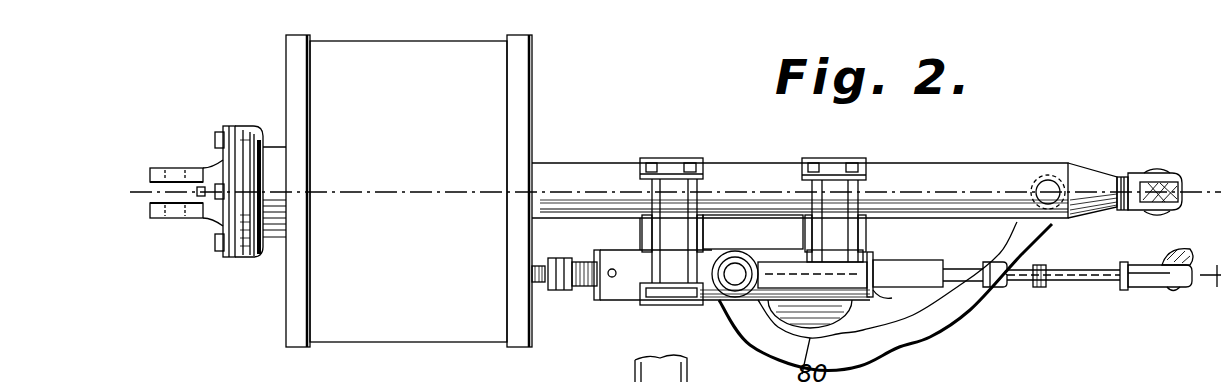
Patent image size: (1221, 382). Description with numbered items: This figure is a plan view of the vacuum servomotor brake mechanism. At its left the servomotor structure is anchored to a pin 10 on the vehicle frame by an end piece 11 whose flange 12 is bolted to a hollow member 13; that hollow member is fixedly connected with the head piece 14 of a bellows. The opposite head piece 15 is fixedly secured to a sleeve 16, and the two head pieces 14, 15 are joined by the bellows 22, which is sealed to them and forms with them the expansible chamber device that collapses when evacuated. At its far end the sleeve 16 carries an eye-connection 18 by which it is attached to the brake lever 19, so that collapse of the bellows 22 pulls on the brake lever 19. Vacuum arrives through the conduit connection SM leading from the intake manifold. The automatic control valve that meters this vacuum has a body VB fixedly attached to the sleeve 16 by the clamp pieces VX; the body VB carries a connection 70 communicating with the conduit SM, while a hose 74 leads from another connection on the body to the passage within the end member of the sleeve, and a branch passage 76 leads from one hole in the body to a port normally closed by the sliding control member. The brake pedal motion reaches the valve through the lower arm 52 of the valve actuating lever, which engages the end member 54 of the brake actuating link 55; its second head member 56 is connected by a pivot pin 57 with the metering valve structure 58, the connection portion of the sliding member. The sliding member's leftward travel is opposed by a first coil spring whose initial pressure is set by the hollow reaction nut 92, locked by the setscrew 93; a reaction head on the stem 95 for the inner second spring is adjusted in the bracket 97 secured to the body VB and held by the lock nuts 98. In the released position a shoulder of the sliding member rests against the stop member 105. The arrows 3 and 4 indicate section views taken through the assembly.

The section line arrow 3 is at (154, 187).
The section line arrow 4 is at (448, 267).
The pin 10 is at (176, 214).
The end piece 11 is at (205, 168).
The flange 12 is at (230, 128).
The hollow member 13 is at (243, 127).
The head piece 14 is at (297, 50).
The head piece 15 is at (527, 74).
The sleeve 16 is at (937, 172).
The eye-connection 18 is at (1135, 180).
The brake lever 19 is at (1170, 178).
The bellows 22 is at (408, 191).
The lower arm 52 is at (1213, 188).
The end member 54 is at (1143, 288).
The brake actuating link 55 is at (1085, 263).
The second head member 56 is at (1030, 288).
The pivot pin 57 is at (997, 289).
The metering valve structure 58 is at (902, 262).
The connection 70 is at (753, 232).
The hose 74 is at (898, 342).
The branch passage 76 is at (770, 318).
The hollow reaction nut 92 is at (597, 252).
The setscrew 93 is at (614, 270).
The stem 95 is at (580, 300).
The bracket 97 is at (565, 252).
The lock nuts 98 is at (545, 284).
The stop member 105 is at (889, 307).
The clamp pieces VX is at (668, 165).
The valve body VB is at (713, 300).
The conduit connection SM is at (800, 218).